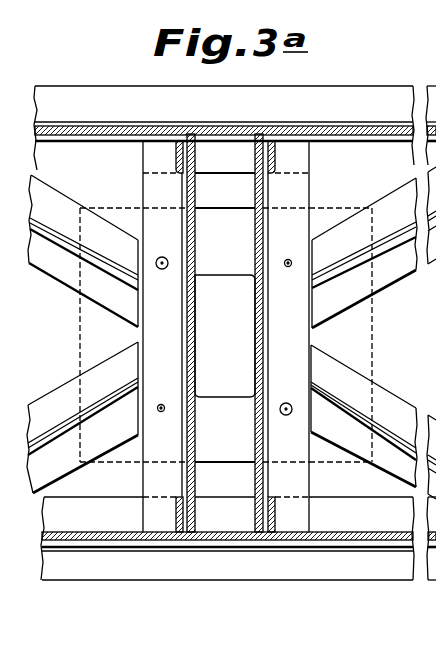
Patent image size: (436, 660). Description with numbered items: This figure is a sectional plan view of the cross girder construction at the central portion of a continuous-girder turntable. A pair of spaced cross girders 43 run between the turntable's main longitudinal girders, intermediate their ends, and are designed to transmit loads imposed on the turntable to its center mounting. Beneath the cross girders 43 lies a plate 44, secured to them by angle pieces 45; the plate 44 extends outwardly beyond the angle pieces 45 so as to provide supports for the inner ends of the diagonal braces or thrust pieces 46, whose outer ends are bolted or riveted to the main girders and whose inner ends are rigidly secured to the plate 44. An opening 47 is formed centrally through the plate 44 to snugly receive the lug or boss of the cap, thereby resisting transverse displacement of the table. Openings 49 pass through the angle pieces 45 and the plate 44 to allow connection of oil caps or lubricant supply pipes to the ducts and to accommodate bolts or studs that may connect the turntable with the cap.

The cross girder 43 is at (197, 262).
The plate 44 is at (82, 328).
The angle piece 45 is at (168, 369).
The diagonal brace 46 is at (406, 340).
The opening 47 is at (225, 278).
The opening 49 is at (164, 270).